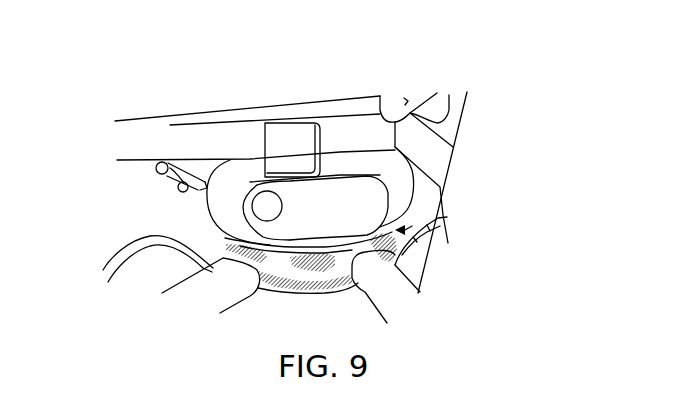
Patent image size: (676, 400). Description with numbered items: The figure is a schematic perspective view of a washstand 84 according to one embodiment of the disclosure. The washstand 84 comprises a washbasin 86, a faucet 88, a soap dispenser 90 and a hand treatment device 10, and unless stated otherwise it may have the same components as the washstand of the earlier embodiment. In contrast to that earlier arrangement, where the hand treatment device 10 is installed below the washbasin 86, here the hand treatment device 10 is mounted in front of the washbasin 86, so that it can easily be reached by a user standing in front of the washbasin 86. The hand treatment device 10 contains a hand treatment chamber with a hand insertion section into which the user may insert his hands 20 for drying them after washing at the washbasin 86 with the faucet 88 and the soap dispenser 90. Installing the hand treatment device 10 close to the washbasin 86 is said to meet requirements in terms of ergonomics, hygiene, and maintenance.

The hand treatment device 10 is at (448, 240).
The hands 20 is at (193, 297).
The washstand 84 is at (455, 80).
The washbasin 86 is at (243, 183).
The faucet 88 is at (287, 140).
The soap dispenser 90 is at (162, 183).